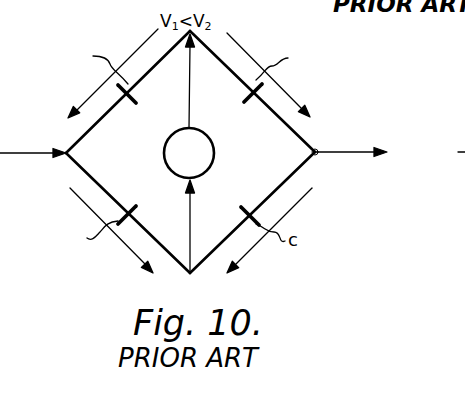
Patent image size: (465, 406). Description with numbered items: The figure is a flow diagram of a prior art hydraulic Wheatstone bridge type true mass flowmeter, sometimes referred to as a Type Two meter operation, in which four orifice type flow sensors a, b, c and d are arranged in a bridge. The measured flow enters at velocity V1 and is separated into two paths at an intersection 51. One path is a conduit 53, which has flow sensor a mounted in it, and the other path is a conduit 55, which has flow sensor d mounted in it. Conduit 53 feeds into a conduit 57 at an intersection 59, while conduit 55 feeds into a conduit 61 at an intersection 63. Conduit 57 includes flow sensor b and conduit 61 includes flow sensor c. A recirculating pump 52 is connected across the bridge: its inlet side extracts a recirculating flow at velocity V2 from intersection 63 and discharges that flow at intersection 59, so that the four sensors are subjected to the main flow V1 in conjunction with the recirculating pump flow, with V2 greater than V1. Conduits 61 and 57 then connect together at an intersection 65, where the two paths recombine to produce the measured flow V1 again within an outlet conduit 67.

The intersection 51 is at (65, 157).
The recirculating pump 52 is at (214, 153).
The conduit 53 is at (102, 118).
The conduit 55 is at (115, 199).
The conduit 57 is at (257, 66).
The intersection 59 is at (193, 31).
The conduit 61 is at (318, 157).
The intersection 63 is at (192, 275).
The intersection 65 is at (318, 150).
The outlet conduit 67 is at (362, 150).